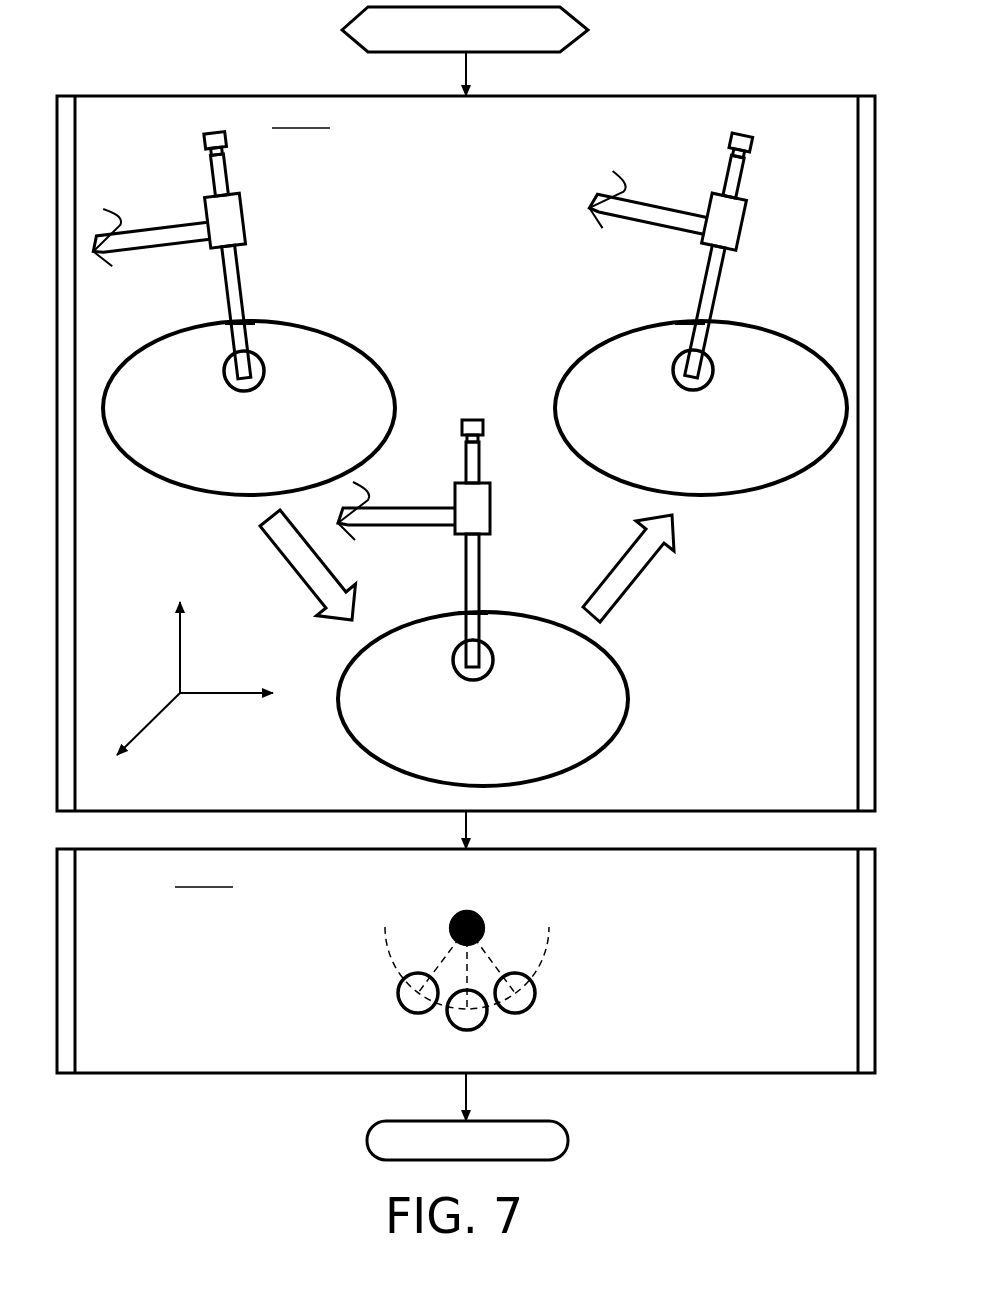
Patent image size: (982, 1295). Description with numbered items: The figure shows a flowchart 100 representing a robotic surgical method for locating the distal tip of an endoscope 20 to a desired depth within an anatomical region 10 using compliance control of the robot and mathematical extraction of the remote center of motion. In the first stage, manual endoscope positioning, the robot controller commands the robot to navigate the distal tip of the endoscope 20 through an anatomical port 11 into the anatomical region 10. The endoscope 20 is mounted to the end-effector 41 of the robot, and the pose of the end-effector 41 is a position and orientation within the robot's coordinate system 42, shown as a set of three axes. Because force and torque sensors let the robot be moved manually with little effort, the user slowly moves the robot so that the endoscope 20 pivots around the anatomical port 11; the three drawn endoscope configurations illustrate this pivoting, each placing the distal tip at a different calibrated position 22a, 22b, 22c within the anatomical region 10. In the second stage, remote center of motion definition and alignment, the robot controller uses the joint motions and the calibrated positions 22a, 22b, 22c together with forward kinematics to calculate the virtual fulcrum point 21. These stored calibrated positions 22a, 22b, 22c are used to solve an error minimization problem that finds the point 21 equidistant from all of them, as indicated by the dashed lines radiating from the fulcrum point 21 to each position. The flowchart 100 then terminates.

The flowchart 100 is at (551, 43).
The anatomical region 10 is at (475, 553).
The anatomical port 11 is at (225, 323).
The endoscope 20 is at (234, 177).
The end-effector 41 is at (212, 206).
The calibrated position of distal tip 22a is at (222, 362).
The calibrated position of distal tip 22b is at (452, 655).
The calibrated position of distal tip 22c is at (672, 362).
The coordinate system 42 is at (153, 678).
The virtual fulcrum point 21 is at (452, 926).